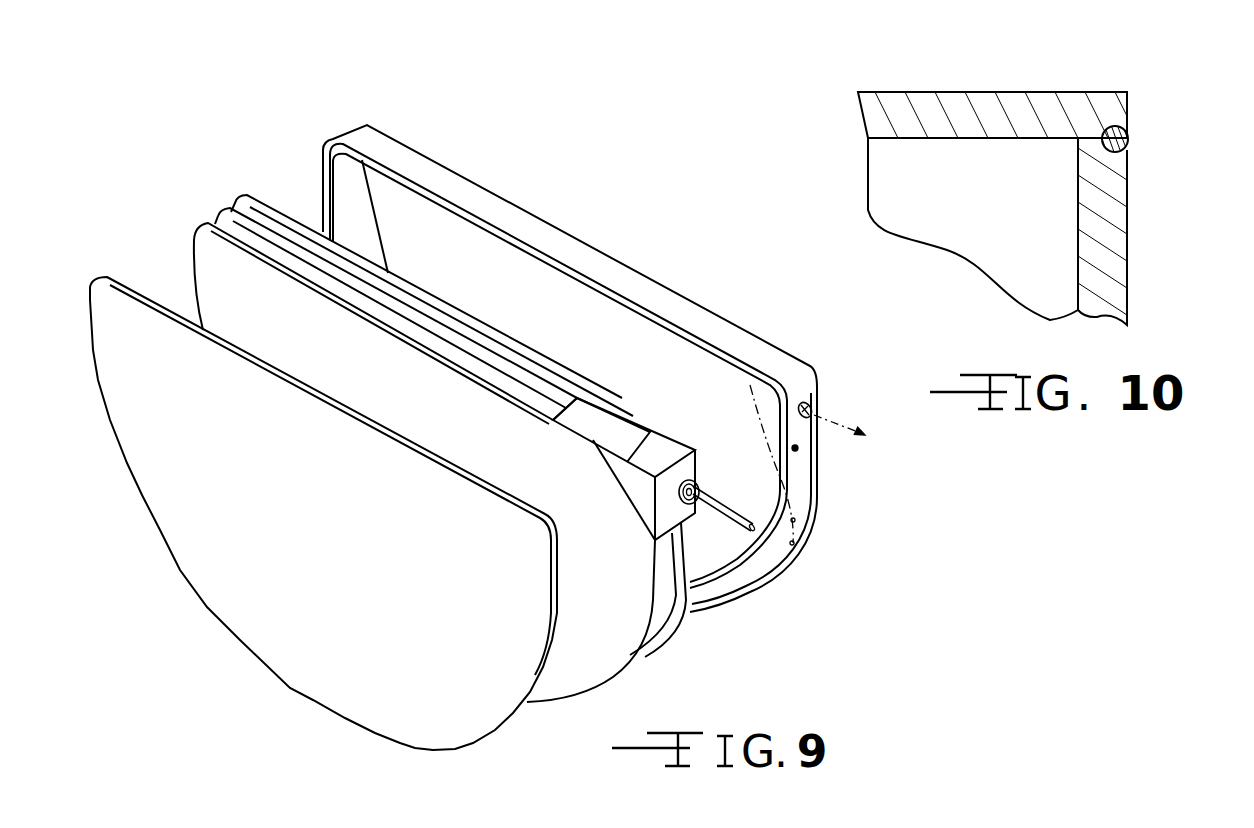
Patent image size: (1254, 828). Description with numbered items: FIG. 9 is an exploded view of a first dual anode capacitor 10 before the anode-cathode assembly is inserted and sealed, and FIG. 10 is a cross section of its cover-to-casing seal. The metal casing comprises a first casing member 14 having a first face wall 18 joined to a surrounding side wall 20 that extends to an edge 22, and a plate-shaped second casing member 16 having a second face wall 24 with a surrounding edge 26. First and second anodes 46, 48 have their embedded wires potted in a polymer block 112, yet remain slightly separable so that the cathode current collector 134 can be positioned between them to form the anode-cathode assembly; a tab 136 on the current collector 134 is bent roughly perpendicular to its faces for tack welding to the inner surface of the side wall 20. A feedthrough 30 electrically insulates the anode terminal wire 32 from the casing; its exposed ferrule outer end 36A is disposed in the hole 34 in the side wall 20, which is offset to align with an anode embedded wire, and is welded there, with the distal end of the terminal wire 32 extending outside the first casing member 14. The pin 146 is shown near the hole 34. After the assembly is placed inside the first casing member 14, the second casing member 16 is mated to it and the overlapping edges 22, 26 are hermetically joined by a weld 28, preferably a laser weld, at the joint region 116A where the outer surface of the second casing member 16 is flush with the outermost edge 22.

In FIG. 9, the lamp assembly 10 is at (570, 348).
In FIG. 9, the first casing member 14 is at (677, 289).
In FIG. 10, the first casing member 14 is at (862, 110).
In FIG. 9, the second casing member 16 is at (207, 607).
In FIG. 10, the second casing member 16 is at (1093, 317).
In FIG. 9, the first face wall 18 is at (588, 313).
In FIG. 9, the surrounding side wall 20 is at (733, 330).
In FIG. 10, the surrounding side wall 20 is at (923, 115).
In FIG. 9, the edge 22 is at (462, 215).
In FIG. 10, the edge 22 is at (1125, 112).
In FIG. 9, the second face wall 24 is at (362, 690).
In FIG. 10, the second face wall 24 is at (1122, 263).
In FIG. 9, the surrounding edge 26 is at (340, 413).
In FIG. 10, the surrounding edge 26 is at (1097, 142).
In FIG. 10, the weld 28 is at (1130, 140).
In FIG. 9, the feedthrough 30 is at (708, 486).
In FIG. 9, the anode terminal wire 32 is at (722, 517).
In FIG. 9, the hole 34 is at (813, 404).
In FIG. 9, the exposed outer end of the feedthrough ferrule 36A is at (705, 483).
In FIG. 9, the anode 46 is at (276, 198).
In FIG. 9, the anode 48 is at (178, 273).
In FIG. 9, the polymer block 112 is at (643, 495).
In FIG. 10, the joint region 116A is at (1135, 212).
In FIG. 9, the current collector 134 is at (640, 412).
In FIG. 9, the tab 136 is at (593, 420).
In FIG. 9, the pin 146 is at (797, 450).